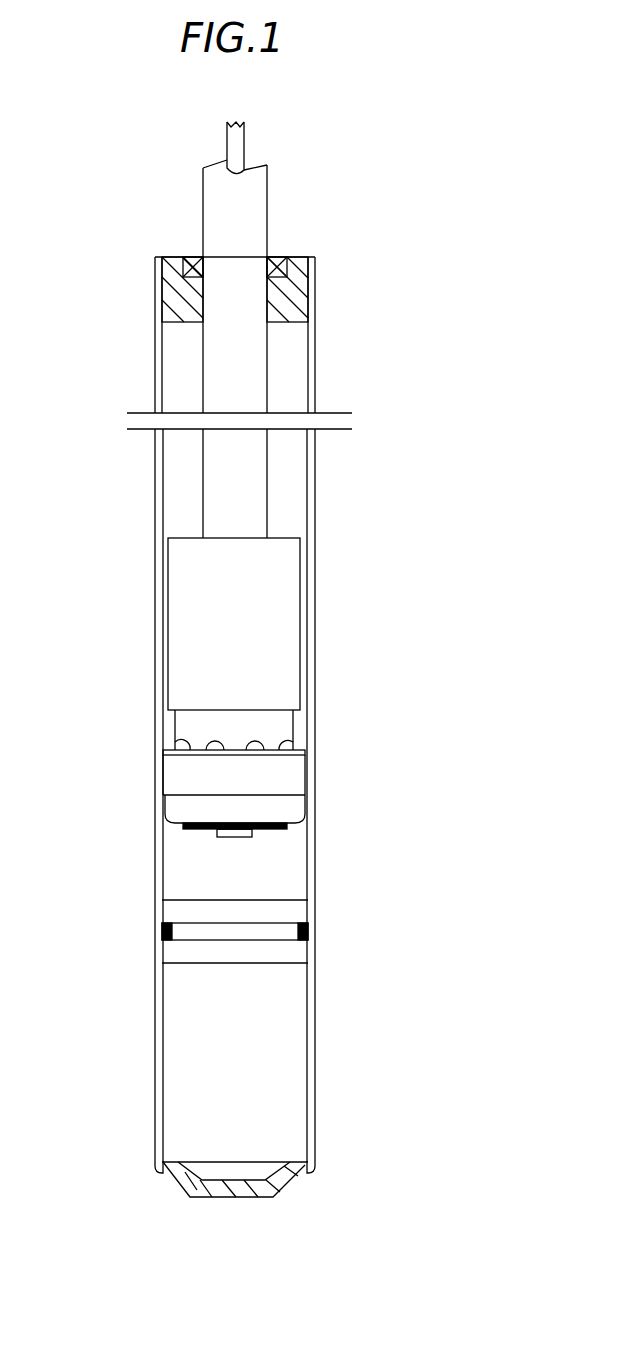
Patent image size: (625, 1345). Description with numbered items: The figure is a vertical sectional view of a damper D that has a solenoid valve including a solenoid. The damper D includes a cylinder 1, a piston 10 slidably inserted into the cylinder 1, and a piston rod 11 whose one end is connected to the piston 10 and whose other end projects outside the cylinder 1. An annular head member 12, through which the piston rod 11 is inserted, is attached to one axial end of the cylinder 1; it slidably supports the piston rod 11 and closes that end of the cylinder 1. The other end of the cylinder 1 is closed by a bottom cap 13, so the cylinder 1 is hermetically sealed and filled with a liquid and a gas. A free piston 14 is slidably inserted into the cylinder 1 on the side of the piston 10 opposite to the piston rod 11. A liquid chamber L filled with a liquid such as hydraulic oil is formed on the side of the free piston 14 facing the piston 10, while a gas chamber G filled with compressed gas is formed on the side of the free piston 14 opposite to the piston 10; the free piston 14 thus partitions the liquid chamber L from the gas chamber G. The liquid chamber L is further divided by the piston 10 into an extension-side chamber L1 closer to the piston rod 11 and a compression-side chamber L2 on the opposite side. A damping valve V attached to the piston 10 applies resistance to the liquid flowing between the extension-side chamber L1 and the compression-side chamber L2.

The damper D is at (349, 223).
The cylinder 1 is at (312, 1042).
The piston 10 is at (297, 805).
The piston rod 11 is at (207, 212).
The head member 12 is at (280, 322).
The bottom cap 13 is at (177, 1178).
The free piston 14 is at (168, 953).
The liquid chamber L is at (292, 481).
The extension-side chamber L1 is at (173, 486).
The compression-side chamber L2 is at (175, 862).
The damping valve V is at (160, 683).
The gas chamber G is at (247, 1078).